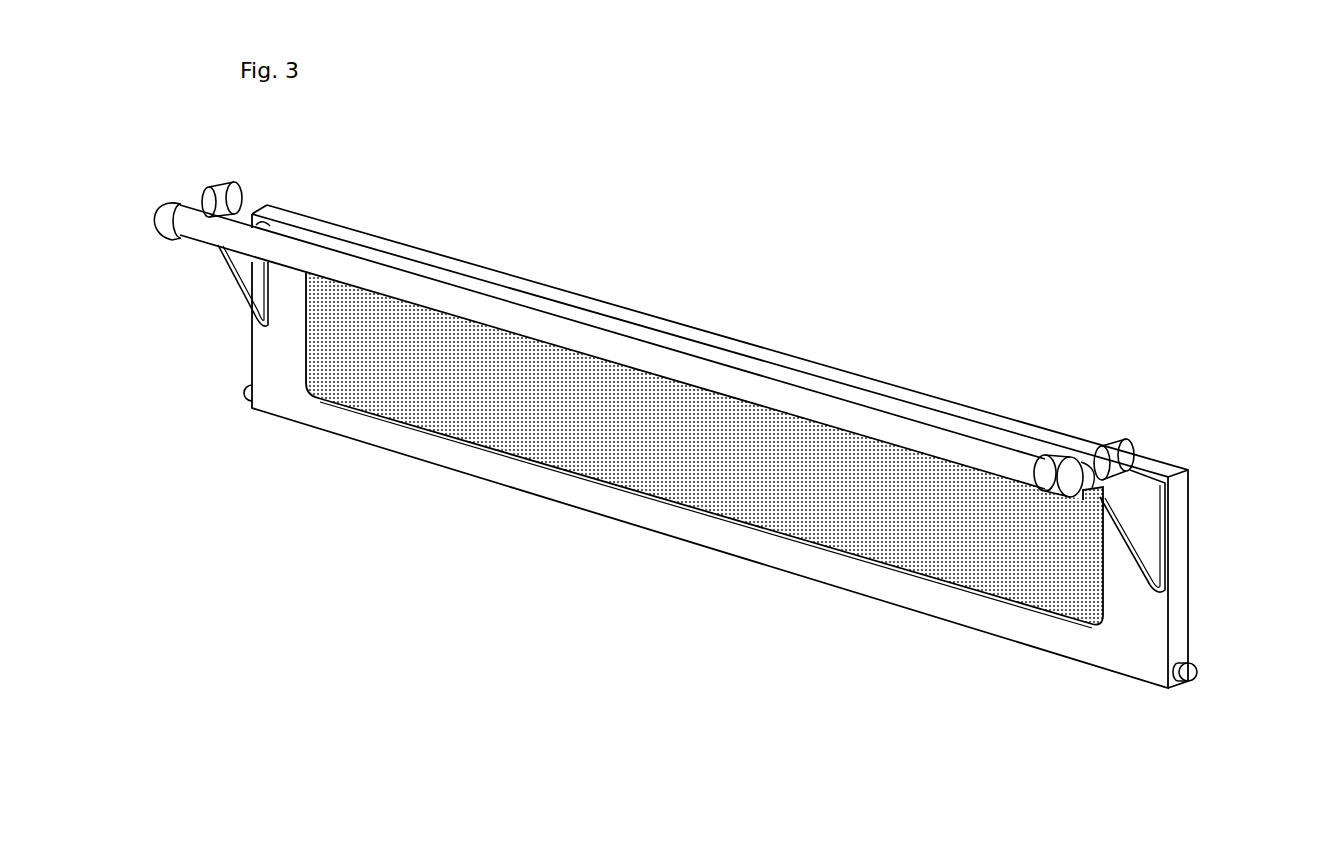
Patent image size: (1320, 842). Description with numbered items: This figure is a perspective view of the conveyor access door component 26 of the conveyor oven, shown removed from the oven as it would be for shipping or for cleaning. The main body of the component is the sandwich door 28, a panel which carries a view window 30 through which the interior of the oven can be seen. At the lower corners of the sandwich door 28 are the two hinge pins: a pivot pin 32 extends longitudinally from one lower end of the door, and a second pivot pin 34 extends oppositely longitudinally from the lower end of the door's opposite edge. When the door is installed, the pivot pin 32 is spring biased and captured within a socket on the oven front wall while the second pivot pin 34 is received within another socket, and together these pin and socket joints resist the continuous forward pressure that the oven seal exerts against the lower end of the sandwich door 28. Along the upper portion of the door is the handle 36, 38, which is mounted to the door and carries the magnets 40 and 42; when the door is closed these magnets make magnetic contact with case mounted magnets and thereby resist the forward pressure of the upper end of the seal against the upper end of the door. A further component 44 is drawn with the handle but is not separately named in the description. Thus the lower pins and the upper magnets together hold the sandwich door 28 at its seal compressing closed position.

The tailgate assembly 26 is at (669, 286).
The sandwich door 28 is at (473, 458).
The view window 30 is at (673, 470).
The pivot pin 32 is at (1197, 672).
The second pivot pin 34 is at (245, 392).
The handle 36 is at (1133, 508).
The handle 38 is at (230, 275).
The magnet 40 is at (1118, 447).
The magnet 42 is at (238, 193).
The bar 44 is at (832, 403).